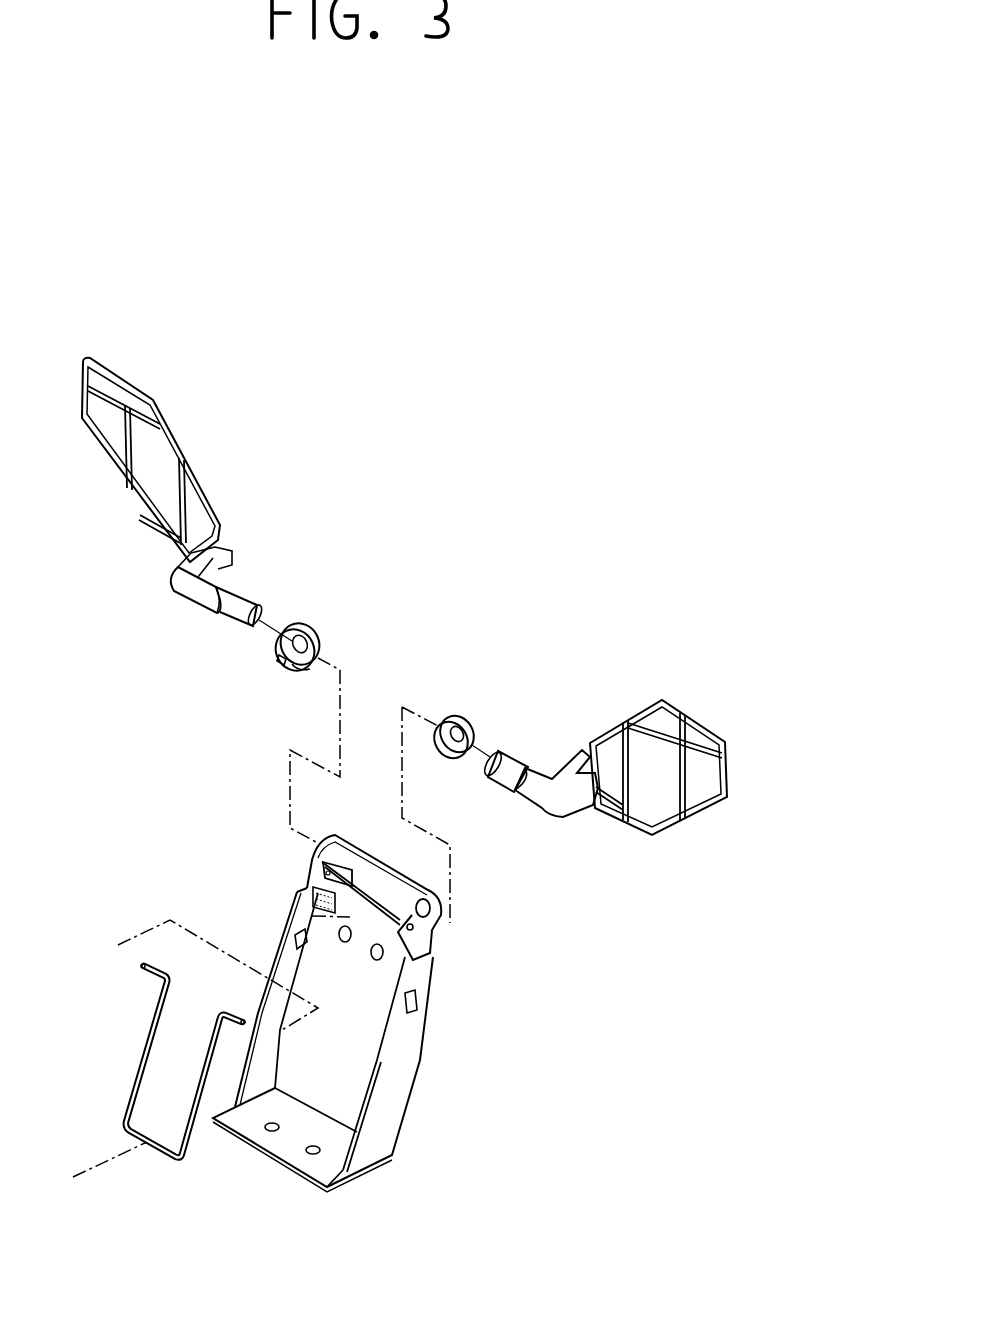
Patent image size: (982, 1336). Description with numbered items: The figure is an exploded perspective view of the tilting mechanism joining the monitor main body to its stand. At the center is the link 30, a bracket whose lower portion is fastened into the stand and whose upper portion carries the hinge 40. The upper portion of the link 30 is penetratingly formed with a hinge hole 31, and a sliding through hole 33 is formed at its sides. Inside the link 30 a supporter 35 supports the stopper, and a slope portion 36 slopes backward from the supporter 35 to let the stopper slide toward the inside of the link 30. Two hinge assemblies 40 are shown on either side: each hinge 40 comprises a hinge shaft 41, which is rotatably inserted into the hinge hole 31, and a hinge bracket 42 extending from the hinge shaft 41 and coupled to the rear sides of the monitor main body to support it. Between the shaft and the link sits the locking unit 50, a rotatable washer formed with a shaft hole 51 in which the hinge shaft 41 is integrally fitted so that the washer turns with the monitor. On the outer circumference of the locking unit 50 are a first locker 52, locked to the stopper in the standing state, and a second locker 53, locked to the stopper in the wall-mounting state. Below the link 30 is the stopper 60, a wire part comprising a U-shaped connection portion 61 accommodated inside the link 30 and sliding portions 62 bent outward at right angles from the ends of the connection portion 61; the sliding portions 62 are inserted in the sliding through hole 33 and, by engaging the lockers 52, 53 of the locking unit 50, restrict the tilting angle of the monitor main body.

The link 30 is at (367, 1157).
The hinge hole 31 is at (430, 916).
The sliding through hole 33 is at (414, 933).
The supporter 35 is at (310, 912).
The slope portion 36 is at (327, 858).
The hinge 40 is at (303, 421).
The hinge shaft 41 is at (237, 580).
The hinge bracket 42 is at (157, 447).
The locking unit 50 is at (413, 590).
The shaft hole 51 is at (312, 632).
The first locker 52 is at (325, 660).
The second locker 53 is at (295, 622).
The stopper 60 is at (230, 1225).
The connection portion 61 is at (163, 1155).
The sliding portions 62 is at (144, 964).